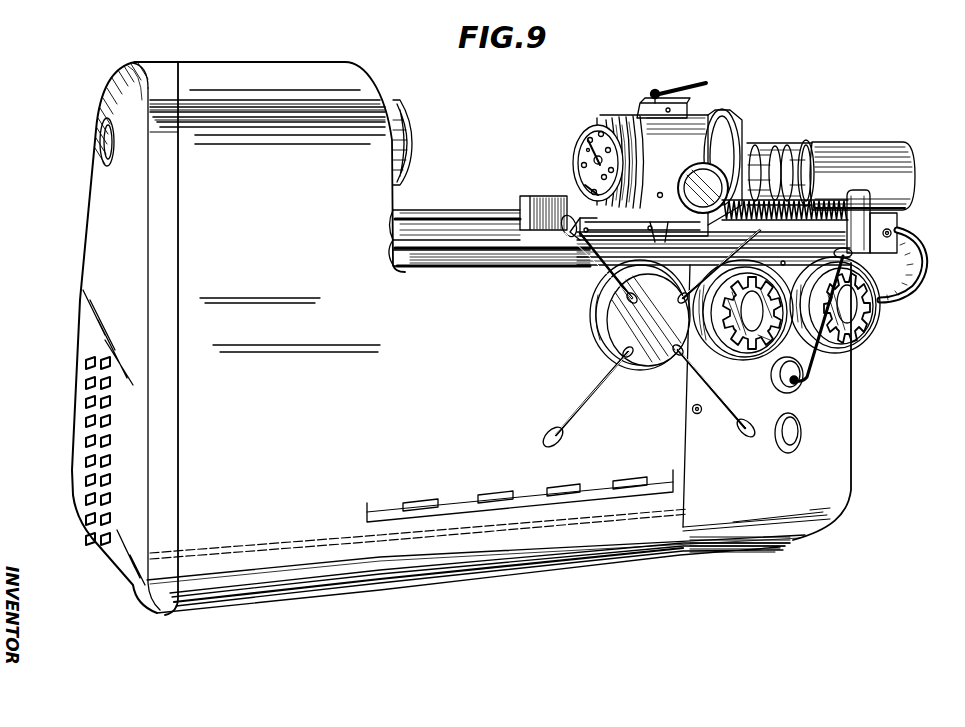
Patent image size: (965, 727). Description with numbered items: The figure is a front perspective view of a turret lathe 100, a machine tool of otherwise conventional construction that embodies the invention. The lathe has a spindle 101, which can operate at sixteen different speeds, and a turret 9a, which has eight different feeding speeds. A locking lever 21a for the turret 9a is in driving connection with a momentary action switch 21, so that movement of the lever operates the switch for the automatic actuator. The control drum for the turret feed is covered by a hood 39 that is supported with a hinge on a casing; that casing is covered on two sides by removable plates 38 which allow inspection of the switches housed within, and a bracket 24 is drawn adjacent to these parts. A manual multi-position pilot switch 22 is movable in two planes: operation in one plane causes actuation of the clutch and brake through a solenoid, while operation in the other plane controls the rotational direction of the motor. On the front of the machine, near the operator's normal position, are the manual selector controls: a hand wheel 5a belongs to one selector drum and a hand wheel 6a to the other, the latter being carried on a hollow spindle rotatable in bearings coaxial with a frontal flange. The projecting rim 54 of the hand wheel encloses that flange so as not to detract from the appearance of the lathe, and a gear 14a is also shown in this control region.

The turret lathe 100 is at (70, 300).
The spindle 101 is at (406, 134).
The turret 9a is at (592, 147).
The momentary action switch 21 is at (700, 84).
The locking lever 21a is at (660, 84).
The hood 39 is at (908, 175).
The bracket 24 is at (851, 198).
The removable plates 38 is at (893, 219).
The manual multi-position pilot switch 22 is at (908, 291).
The projecting rim 54 is at (767, 350).
The hand wheel 5a is at (858, 338).
The gear 14a is at (882, 318).
The hand wheel 6a is at (811, 324).